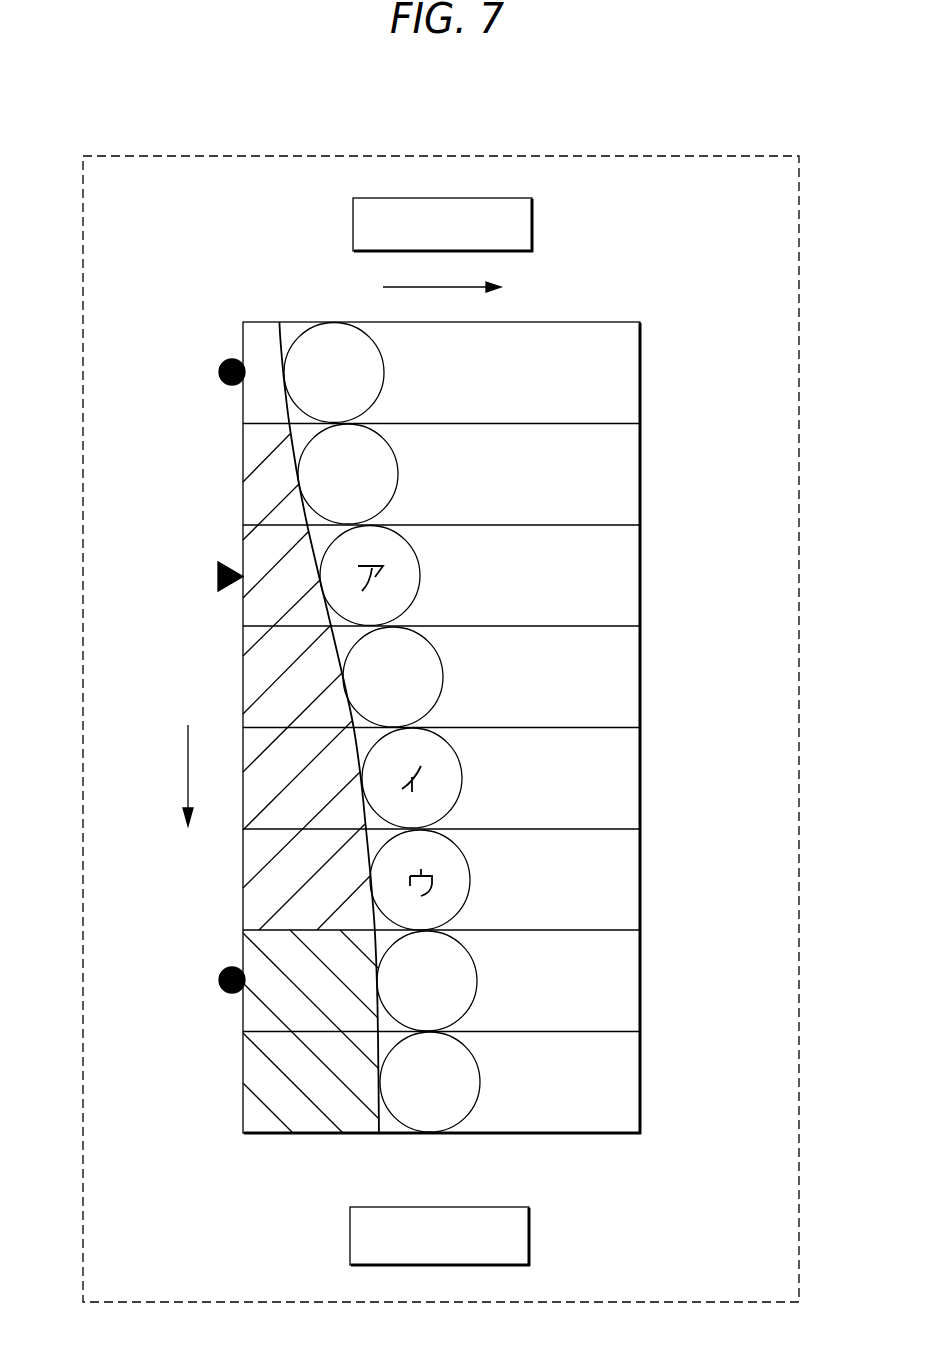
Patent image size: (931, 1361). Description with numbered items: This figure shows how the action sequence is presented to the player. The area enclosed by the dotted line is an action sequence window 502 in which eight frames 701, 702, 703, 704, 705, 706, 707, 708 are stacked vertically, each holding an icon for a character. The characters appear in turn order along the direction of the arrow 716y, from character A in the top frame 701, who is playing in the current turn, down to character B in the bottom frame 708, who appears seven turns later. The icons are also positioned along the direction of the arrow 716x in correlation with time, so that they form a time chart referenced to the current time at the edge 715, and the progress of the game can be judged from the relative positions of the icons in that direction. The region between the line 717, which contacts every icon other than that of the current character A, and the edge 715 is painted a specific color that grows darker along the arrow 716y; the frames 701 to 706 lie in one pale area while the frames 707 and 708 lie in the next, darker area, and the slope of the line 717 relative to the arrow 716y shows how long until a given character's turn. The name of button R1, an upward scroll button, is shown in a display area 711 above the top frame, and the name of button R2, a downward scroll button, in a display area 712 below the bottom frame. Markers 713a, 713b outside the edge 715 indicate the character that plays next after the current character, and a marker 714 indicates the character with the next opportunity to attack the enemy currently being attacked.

The action sequence window 502 is at (444, 156).
The frame 701 is at (641, 372).
The frame 702 is at (641, 474).
The frame 703 is at (641, 576).
The frame 704 is at (641, 677).
The frame 705 is at (641, 778).
The frame 706 is at (641, 880).
The frame 707 is at (641, 981).
The frame 708 is at (641, 1082).
The display area 711 is at (534, 222).
The display area 712 is at (531, 1237).
The marker 713a is at (217, 372).
The marker 713b is at (216, 980).
The marker 714 is at (215, 577).
The edge 715 is at (221, 1172).
The arrow 716x is at (398, 287).
The arrow 716y is at (189, 777).
The line 717 is at (374, 941).